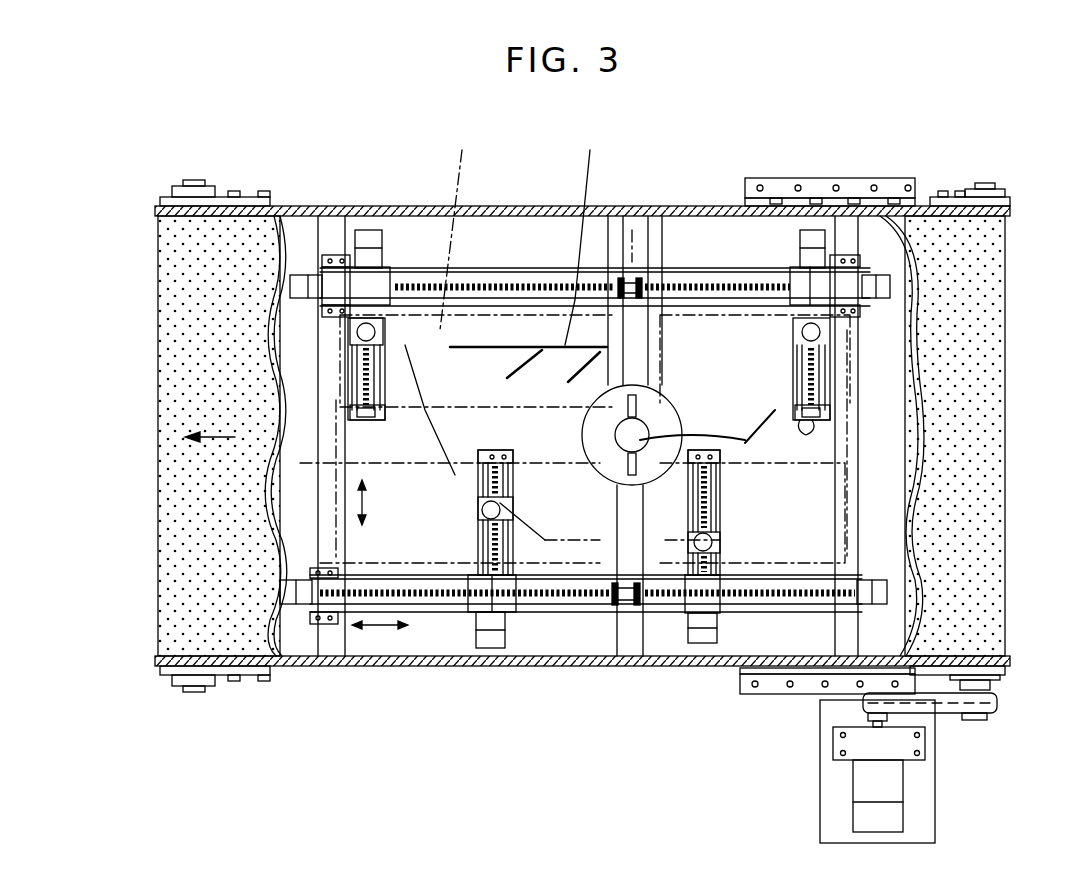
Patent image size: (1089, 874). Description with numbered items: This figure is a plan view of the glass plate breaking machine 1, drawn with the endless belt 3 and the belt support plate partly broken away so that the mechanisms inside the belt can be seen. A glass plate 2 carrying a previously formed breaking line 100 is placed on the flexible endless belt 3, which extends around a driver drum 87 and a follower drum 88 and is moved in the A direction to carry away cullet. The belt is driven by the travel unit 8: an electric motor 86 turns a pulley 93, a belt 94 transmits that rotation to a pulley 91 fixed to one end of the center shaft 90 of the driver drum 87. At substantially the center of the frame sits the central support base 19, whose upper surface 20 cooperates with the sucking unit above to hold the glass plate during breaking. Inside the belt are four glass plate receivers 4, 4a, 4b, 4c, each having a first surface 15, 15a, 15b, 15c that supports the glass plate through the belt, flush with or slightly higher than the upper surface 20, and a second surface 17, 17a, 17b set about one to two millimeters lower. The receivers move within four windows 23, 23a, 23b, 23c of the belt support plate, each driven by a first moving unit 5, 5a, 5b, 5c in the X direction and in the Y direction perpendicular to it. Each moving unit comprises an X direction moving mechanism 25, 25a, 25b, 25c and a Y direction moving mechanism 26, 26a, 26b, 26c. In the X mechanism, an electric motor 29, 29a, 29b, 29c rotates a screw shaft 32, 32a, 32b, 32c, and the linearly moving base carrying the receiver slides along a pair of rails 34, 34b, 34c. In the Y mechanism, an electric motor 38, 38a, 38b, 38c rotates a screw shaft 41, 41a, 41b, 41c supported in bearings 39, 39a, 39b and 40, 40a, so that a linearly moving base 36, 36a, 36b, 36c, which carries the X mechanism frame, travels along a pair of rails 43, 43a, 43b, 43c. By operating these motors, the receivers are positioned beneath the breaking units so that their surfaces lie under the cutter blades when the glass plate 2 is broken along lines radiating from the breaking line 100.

The glass plate breaking machine 1 is at (795, 170).
The glass plate 2 is at (439, 299).
The endless belt 3 is at (158, 592).
The glass plate receiver 4 is at (482, 508).
The glass plate receiver 4a is at (355, 345).
The glass plate receiver 4b is at (722, 535).
The glass plate receiver 4c is at (825, 335).
The first moving unit 5 is at (300, 650).
The first moving unit 5a is at (378, 222).
The first moving unit 5b is at (705, 655).
The first moving unit 5c is at (790, 225).
The travel unit 8 is at (815, 790).
The first surface 15 is at (482, 510).
The first surface 15a is at (375, 332).
The first surface 15b is at (712, 542).
The first surface 15c is at (802, 335).
The second surface 17 is at (502, 500).
The second surface 17a is at (348, 325).
The second surface 17b is at (718, 530).
The central support base 19 is at (583, 435).
The upper surface of central support base 20 is at (652, 408).
The window 23 is at (350, 535).
The window 23a is at (470, 315).
The window 23b is at (820, 492).
The window 23c is at (725, 372).
The X direction moving mechanism 25 is at (485, 652).
The X direction moving mechanism 25a is at (386, 392).
The X direction moving mechanism 25b is at (712, 645).
The X direction moving mechanism 25c is at (830, 412).
The Y direction moving mechanism 26 is at (405, 628).
The Y direction moving mechanism 26a is at (410, 268).
The Y direction moving mechanism 26b is at (745, 612).
The Y direction moving mechanism 26c is at (828, 313).
The electric motor 29 is at (475, 640).
The electric motor 29a is at (368, 230).
The electric motor 29b is at (700, 645).
The electric motor 29c is at (815, 230).
The screw shaft 32 is at (480, 490).
The screw shaft 32a is at (352, 385).
The screw shaft 32b is at (717, 485).
The screw shaft 32c is at (805, 380).
The rails 34 is at (480, 545).
The rails 34b is at (750, 430).
The rails 34c is at (808, 442).
The linearly moving base 36 is at (475, 625).
The linearly moving base 36a is at (356, 286).
The linearly moving base 36b is at (690, 625).
The linearly moving base 36c is at (790, 282).
The electric motor 38 is at (290, 645).
The electric motor 38a is at (305, 275).
The electric motor 38b is at (872, 604).
The electric motor 38c is at (875, 298).
The bearing 39 is at (615, 616).
The bearing 39a is at (630, 278).
The bearing 39b is at (636, 616).
The bearing 40 is at (325, 640).
The bearing 40a is at (330, 255).
The screw shaft 41 is at (540, 615).
The screw shaft 41a is at (548, 268).
The screw shaft 41b is at (815, 612).
The screw shaft 41c is at (720, 268).
The rails 43 is at (565, 615).
The rails 43a is at (480, 300).
The rails 43b is at (820, 582).
The rails 43c is at (698, 287).
The electric motor 86 is at (895, 782).
The driver drum 87 is at (1000, 668).
The follower drum 88 is at (160, 668).
The center shaft 90 is at (995, 688).
The pulley 91 is at (980, 720).
The pulley 93 is at (868, 717).
The belt 94 is at (997, 705).
The breaking line 100 is at (591, 234).
The A direction A is at (175, 455).
The X direction X is at (345, 498).
The Y direction Y is at (380, 630).